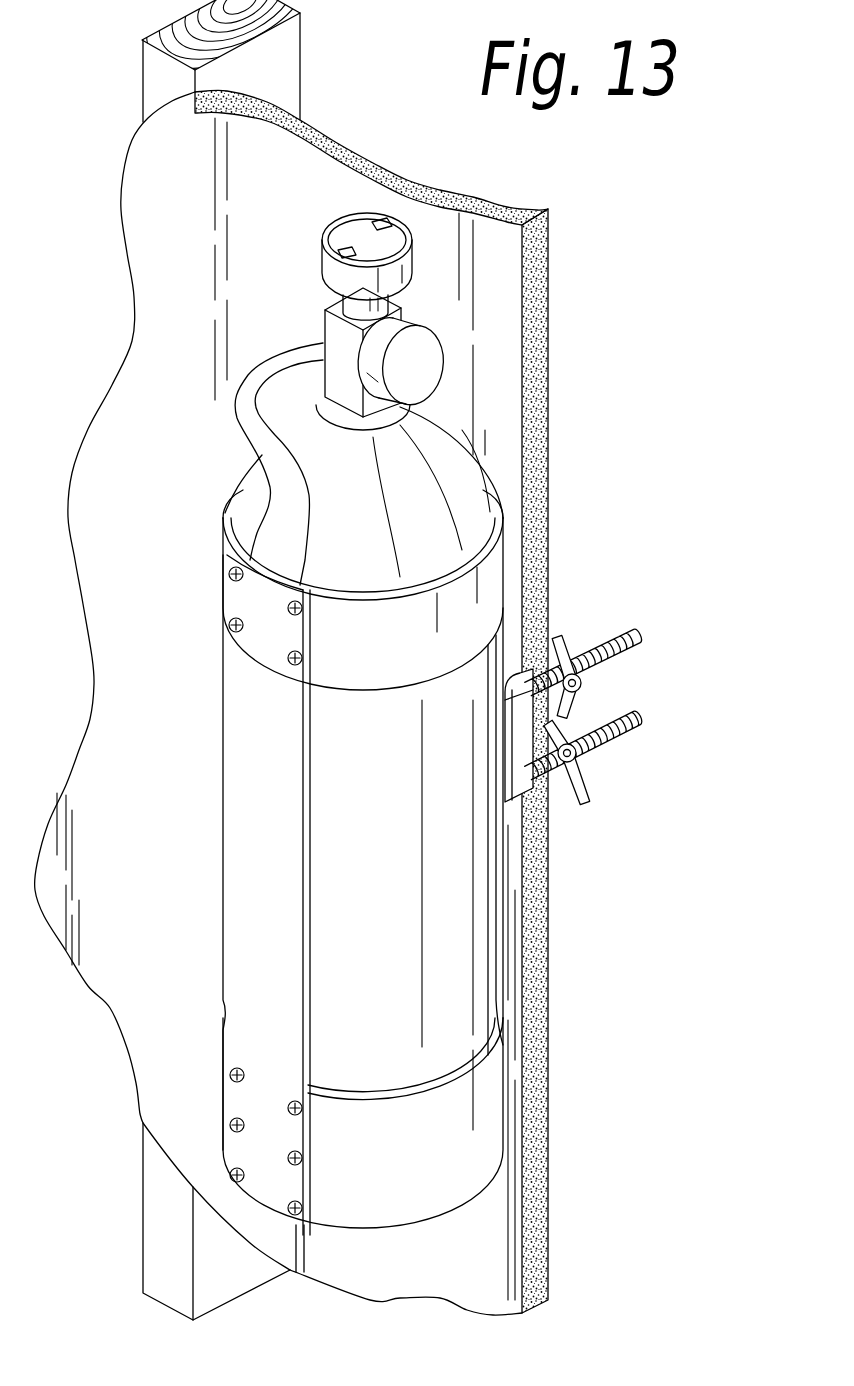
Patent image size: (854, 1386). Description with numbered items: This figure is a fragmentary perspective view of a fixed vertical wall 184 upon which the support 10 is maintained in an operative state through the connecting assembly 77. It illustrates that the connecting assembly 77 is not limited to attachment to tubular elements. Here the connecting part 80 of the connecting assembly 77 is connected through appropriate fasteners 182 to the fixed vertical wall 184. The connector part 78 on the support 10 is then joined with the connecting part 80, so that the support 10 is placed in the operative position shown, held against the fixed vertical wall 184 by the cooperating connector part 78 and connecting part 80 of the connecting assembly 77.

The support 10 is at (482, 602).
The connecting assembly 77 is at (586, 717).
The connector part 78 is at (510, 772).
The connecting part 80 is at (548, 640).
The fasteners 182 is at (636, 645).
The fixed vertical wall 184 is at (509, 327).